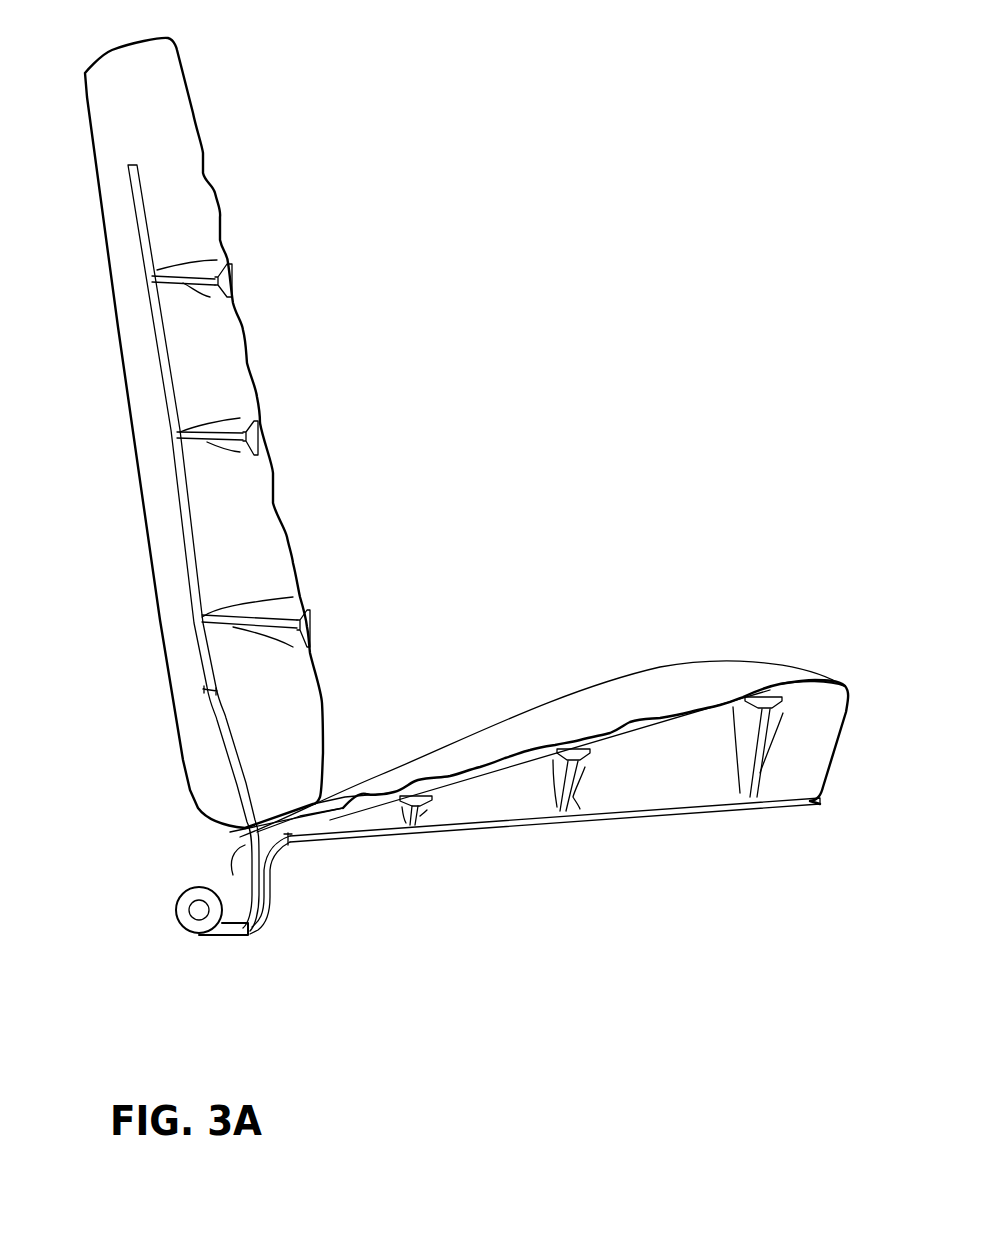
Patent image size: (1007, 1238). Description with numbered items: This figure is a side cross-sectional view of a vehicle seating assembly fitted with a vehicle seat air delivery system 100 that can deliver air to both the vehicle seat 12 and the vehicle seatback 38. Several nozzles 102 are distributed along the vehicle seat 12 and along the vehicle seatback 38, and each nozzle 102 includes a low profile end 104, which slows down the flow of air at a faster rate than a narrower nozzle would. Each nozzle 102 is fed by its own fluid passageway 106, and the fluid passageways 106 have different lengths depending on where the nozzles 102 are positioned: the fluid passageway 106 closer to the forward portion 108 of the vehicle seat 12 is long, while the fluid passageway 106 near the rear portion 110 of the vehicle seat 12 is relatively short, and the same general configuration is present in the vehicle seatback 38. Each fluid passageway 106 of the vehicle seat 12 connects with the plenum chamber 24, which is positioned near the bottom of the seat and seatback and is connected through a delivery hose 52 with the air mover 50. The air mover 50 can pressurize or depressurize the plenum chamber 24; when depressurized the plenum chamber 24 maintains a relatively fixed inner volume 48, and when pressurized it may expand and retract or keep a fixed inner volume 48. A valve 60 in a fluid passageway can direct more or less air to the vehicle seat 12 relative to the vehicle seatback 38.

The vehicle seat 12 is at (517, 878).
The plenum chamber 24 is at (182, 515).
The vehicle seatback 38 is at (254, 168).
The inner volume 48 is at (193, 577).
The air mover 50 is at (223, 937).
The delivery hose 52 is at (237, 885).
The valve 60 is at (207, 693).
The vehicle seat air delivery system 100 is at (408, 338).
The nozzle 102 is at (227, 283).
The low profile end 104 is at (230, 268).
The fluid passageway 106 is at (183, 270).
The forward portion 108 is at (832, 682).
The rear portion 110 is at (342, 800).